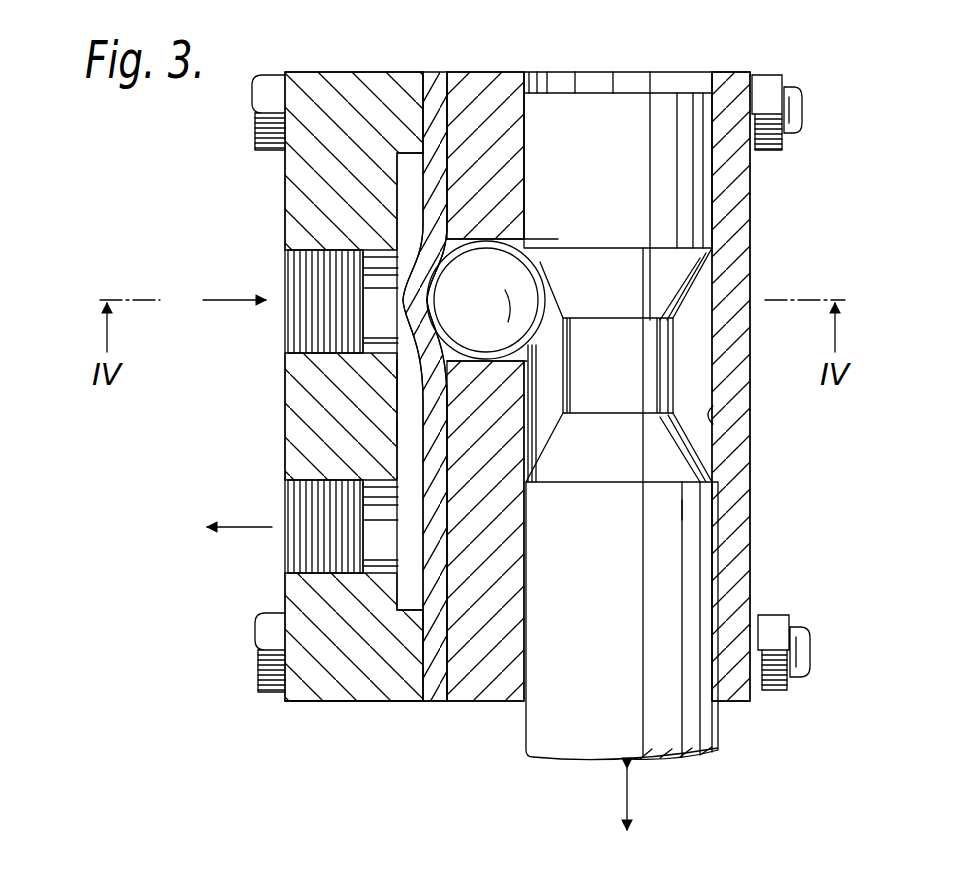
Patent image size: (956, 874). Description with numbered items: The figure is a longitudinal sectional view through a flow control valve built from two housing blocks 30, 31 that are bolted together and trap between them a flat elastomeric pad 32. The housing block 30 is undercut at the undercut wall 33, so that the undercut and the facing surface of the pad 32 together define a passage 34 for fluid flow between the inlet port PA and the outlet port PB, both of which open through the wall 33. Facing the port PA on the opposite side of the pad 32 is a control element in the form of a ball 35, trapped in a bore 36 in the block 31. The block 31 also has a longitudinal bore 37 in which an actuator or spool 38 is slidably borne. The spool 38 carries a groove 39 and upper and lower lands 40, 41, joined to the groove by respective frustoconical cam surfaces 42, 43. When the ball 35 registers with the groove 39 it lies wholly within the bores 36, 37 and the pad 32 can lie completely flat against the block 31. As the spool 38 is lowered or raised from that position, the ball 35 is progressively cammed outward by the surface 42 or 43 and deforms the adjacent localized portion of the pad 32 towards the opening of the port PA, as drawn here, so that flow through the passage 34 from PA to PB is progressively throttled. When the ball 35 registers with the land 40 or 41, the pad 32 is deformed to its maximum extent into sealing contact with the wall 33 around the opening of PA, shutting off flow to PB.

The housing block 30 is at (340, 60).
The housing block 31 is at (726, 63).
The flat elastomeric pad 32 is at (430, 72).
The undercut wall 33 is at (405, 428).
The passage 34 is at (408, 378).
The ball 35 is at (470, 285).
The bore 36 is at (527, 353).
The longitudinal bore 37 is at (712, 418).
The spool 38 is at (690, 578).
The groove 39 is at (653, 383).
The upper land 40 is at (690, 203).
The lower land 41 is at (690, 538).
The frustoconical cam surface 42 is at (677, 278).
The frustoconical cam surface 43 is at (673, 460).
The inlet port PA is at (365, 305).
The outlet port PB is at (383, 533).